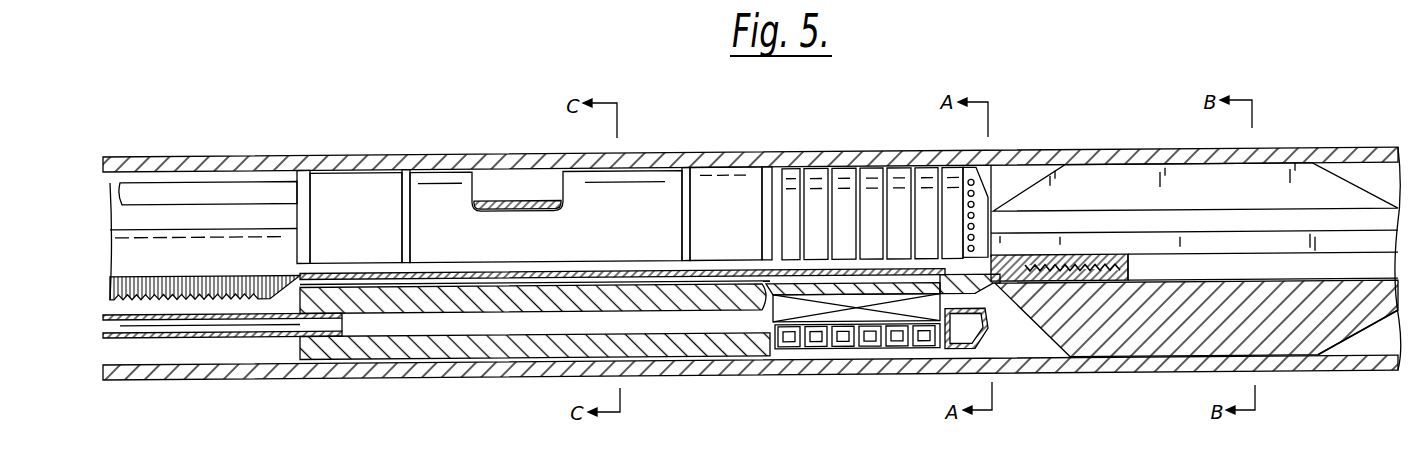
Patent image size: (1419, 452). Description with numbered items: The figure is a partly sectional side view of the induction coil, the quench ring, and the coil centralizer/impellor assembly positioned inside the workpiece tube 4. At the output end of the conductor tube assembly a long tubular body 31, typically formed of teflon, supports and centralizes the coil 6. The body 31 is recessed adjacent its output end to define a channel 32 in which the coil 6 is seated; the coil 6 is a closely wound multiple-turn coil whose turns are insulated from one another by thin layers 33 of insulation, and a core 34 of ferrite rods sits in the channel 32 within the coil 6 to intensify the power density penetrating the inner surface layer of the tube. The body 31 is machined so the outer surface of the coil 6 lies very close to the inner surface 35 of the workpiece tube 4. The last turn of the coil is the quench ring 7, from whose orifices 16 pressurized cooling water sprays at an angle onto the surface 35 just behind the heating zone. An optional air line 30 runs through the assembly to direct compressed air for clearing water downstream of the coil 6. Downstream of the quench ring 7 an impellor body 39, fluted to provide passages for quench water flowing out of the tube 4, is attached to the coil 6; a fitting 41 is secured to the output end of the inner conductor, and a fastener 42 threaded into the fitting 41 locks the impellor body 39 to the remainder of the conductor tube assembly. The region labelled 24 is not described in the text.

The workpiece tube 4 is at (521, 167).
The induction coil 6 is at (842, 190).
The quench ring 7 is at (968, 193).
The orifices 16 is at (998, 210).
The slot 24 is at (225, 193).
The air line 30 is at (228, 334).
The tubular body 31 is at (436, 192).
The channel 32 is at (773, 312).
The layers of insulation 33 is at (858, 353).
The core of ferrite rods 34 is at (770, 310).
The inner surface of the workpiece tube 35 is at (1367, 358).
The impellor body 39 is at (1202, 332).
The fitting 41 is at (1020, 292).
The fastener 42 is at (1130, 283).